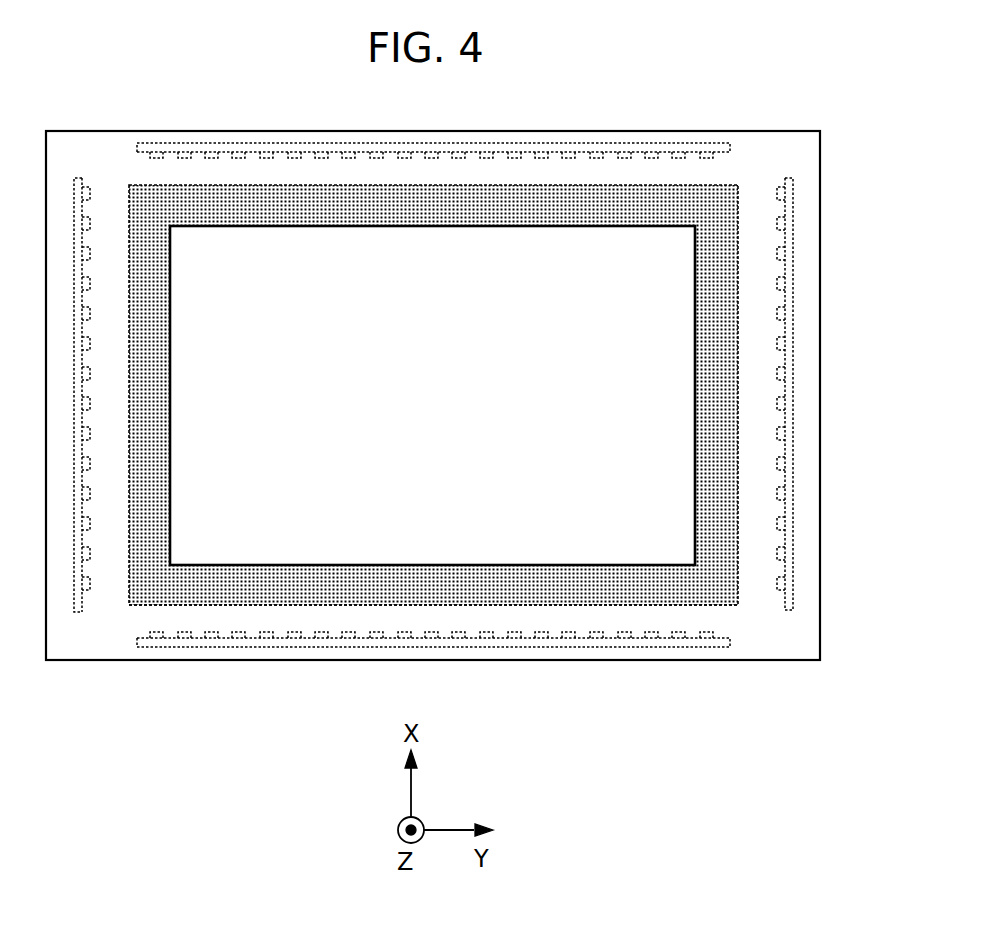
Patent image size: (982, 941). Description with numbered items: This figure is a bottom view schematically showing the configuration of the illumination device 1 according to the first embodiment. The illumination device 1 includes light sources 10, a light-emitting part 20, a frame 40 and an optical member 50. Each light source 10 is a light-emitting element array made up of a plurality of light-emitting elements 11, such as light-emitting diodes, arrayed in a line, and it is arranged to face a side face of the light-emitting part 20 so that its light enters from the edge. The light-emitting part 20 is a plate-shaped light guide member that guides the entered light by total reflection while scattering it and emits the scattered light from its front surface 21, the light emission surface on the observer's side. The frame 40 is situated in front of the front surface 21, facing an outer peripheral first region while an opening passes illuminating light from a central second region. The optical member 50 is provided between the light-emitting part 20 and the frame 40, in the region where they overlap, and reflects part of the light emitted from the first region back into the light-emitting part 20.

The illumination device 1 is at (760, 100).
The light source 10 is at (76, 612).
The light-emitting element 11 is at (87, 192).
The light-emitting part 20 is at (685, 603).
The front surface 21 is at (590, 540).
The frame 40 is at (787, 660).
The optical member 50 is at (240, 592).